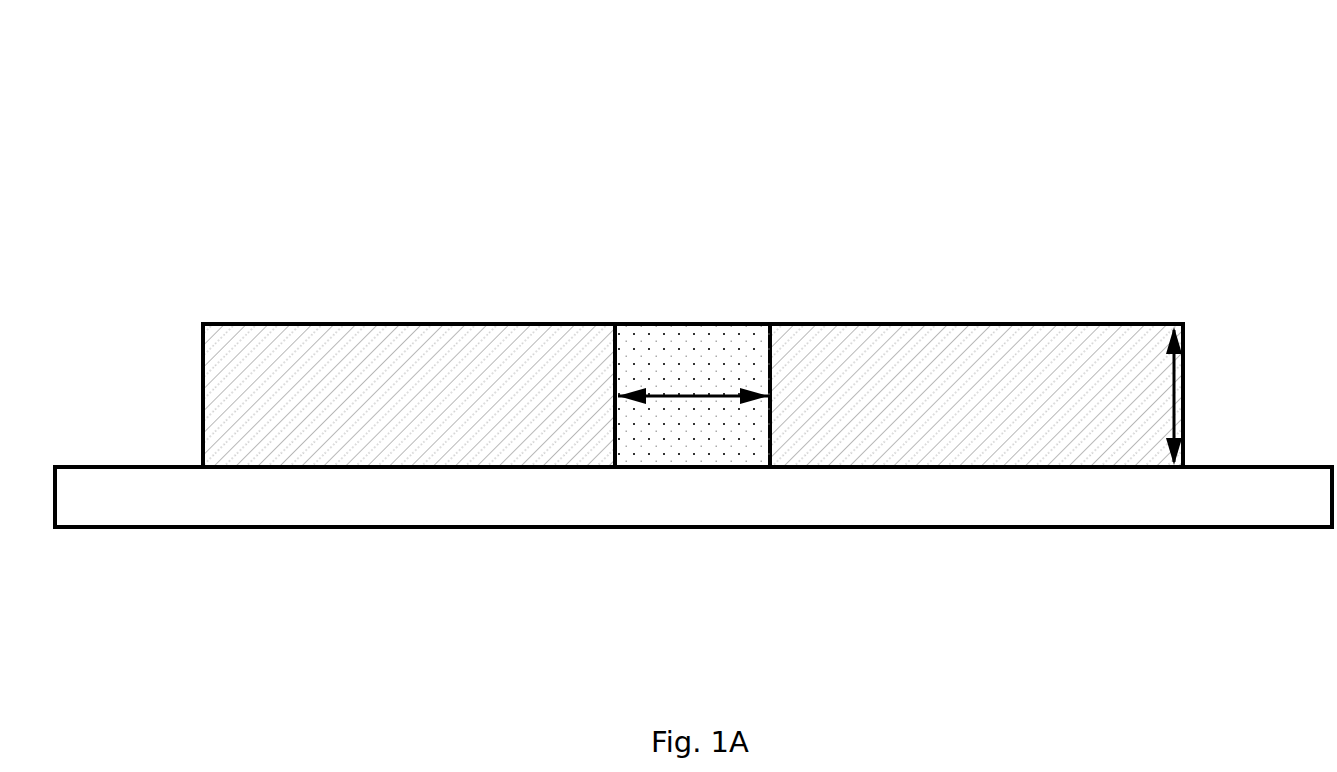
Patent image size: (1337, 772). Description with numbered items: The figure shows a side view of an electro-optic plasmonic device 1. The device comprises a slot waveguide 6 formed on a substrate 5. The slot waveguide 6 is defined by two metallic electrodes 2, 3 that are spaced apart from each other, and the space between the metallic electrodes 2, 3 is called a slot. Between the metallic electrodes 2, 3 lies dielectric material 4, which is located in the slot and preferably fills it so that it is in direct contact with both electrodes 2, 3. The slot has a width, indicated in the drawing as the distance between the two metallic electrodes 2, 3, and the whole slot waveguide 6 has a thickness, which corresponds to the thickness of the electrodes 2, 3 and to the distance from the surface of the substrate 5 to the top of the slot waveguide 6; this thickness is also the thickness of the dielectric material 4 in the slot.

The electro-optic plasmonic device 1 is at (272, 218).
The metallic electrode 2 is at (445, 365).
The metallic electrode 3 is at (945, 368).
The dielectric material 4 is at (722, 333).
The substrate 5 is at (705, 500).
The slot waveguide 6 is at (748, 435).